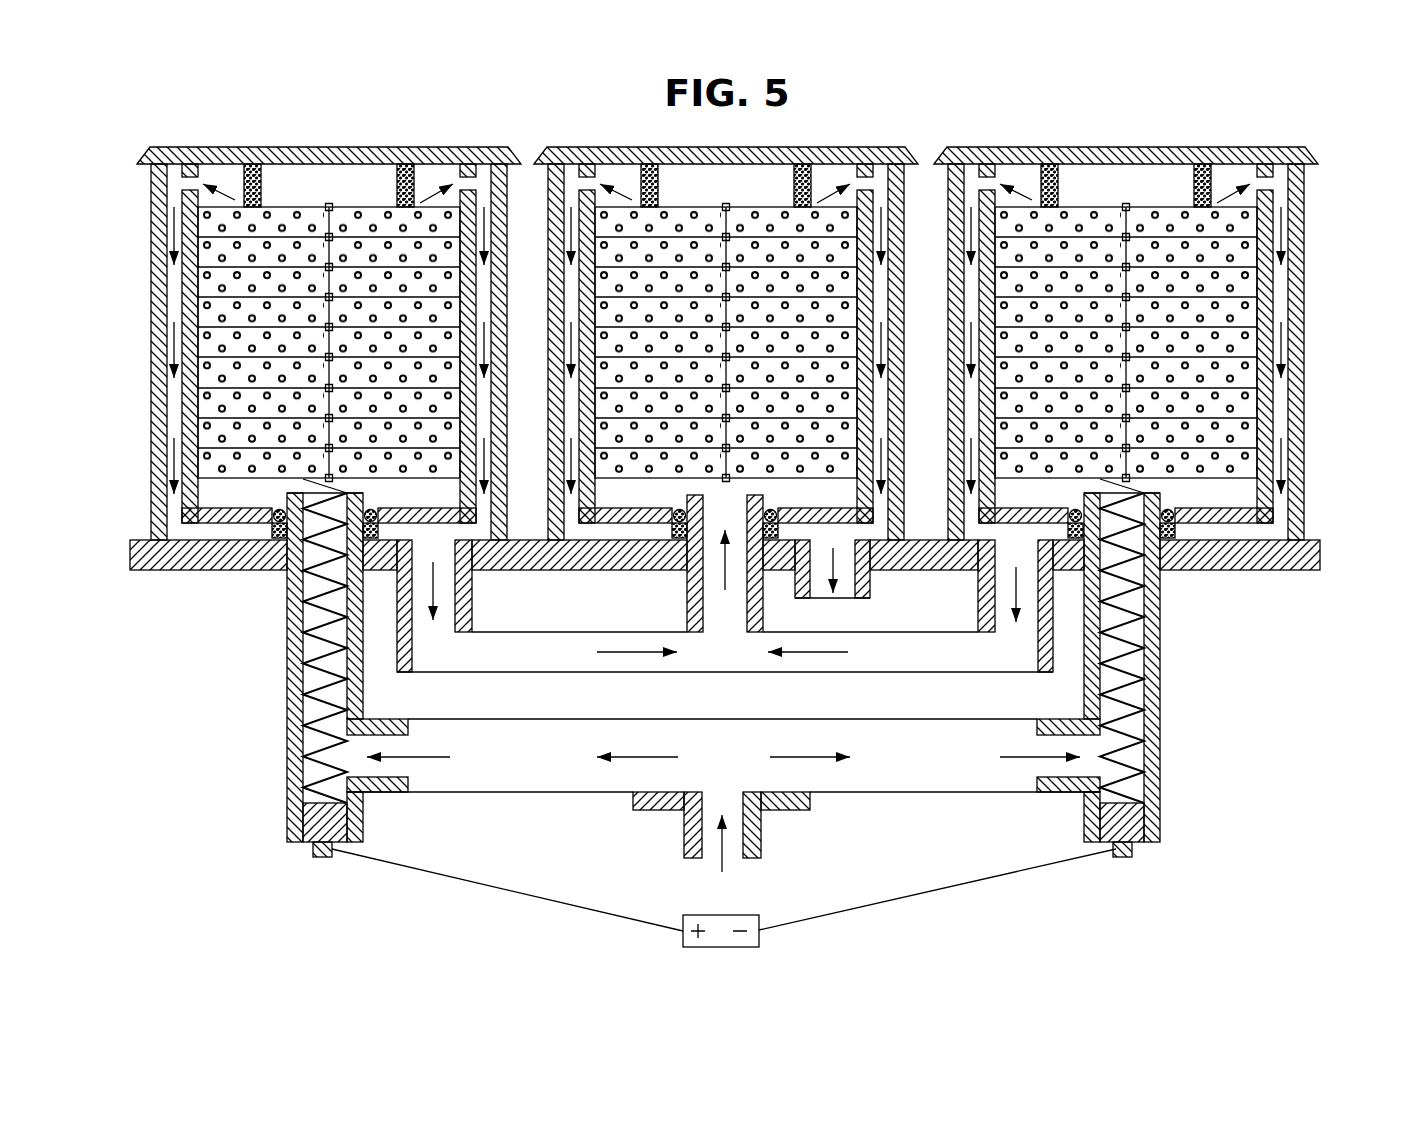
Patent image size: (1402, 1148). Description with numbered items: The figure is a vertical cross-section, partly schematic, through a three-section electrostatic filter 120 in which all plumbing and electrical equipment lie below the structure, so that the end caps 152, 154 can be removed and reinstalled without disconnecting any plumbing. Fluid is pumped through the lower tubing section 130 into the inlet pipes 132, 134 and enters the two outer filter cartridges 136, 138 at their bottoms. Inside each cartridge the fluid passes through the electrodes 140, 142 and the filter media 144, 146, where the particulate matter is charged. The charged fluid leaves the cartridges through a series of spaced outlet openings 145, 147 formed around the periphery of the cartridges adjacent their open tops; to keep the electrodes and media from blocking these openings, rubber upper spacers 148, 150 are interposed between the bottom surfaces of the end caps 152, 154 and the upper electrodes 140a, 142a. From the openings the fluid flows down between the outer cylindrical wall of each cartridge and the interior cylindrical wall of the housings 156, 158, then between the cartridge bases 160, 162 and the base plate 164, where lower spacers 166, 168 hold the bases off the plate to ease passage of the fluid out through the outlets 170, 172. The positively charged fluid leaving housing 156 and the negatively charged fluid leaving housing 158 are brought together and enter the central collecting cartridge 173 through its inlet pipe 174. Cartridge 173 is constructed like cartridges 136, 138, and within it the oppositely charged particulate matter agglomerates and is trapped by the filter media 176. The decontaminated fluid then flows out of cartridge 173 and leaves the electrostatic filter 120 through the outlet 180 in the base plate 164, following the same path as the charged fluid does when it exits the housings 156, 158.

The electrostatic filter 120 is at (232, 127).
The lower tubing section 130 is at (873, 795).
The inlet pipe 132 is at (287, 700).
The inlet pipe 134 is at (1160, 702).
The filter cartridge 136 is at (183, 387).
The filter cartridge 138 is at (1274, 387).
The electrodes 140 is at (223, 447).
The upper electrode 140a is at (378, 207).
The electrodes 142 is at (1230, 447).
The upper electrode 142a is at (1168, 210).
The filter media 144 is at (222, 338).
The outlet openings 145 is at (185, 183).
The filter media 146 is at (1230, 345).
The outlet openings 147 is at (1262, 185).
The upper spacer 148 is at (262, 183).
The upper spacer 150 is at (1061, 183).
The end cap 152 is at (473, 147).
The end cap 154 is at (1280, 147).
The housing 156 is at (157, 430).
The housing 158 is at (1304, 430).
The base 160 is at (235, 517).
The base 162 is at (1217, 527).
The base plate 164 is at (556, 571).
The lower spacer 166 is at (282, 528).
The lower spacer 168 is at (1170, 540).
The outlet 170 is at (398, 622).
The outlet 172 is at (1052, 622).
The collecting cartridge 173 is at (862, 310).
The inlet pipe 174 is at (687, 598).
The filter media 176 is at (740, 207).
The outlet 180 is at (872, 588).